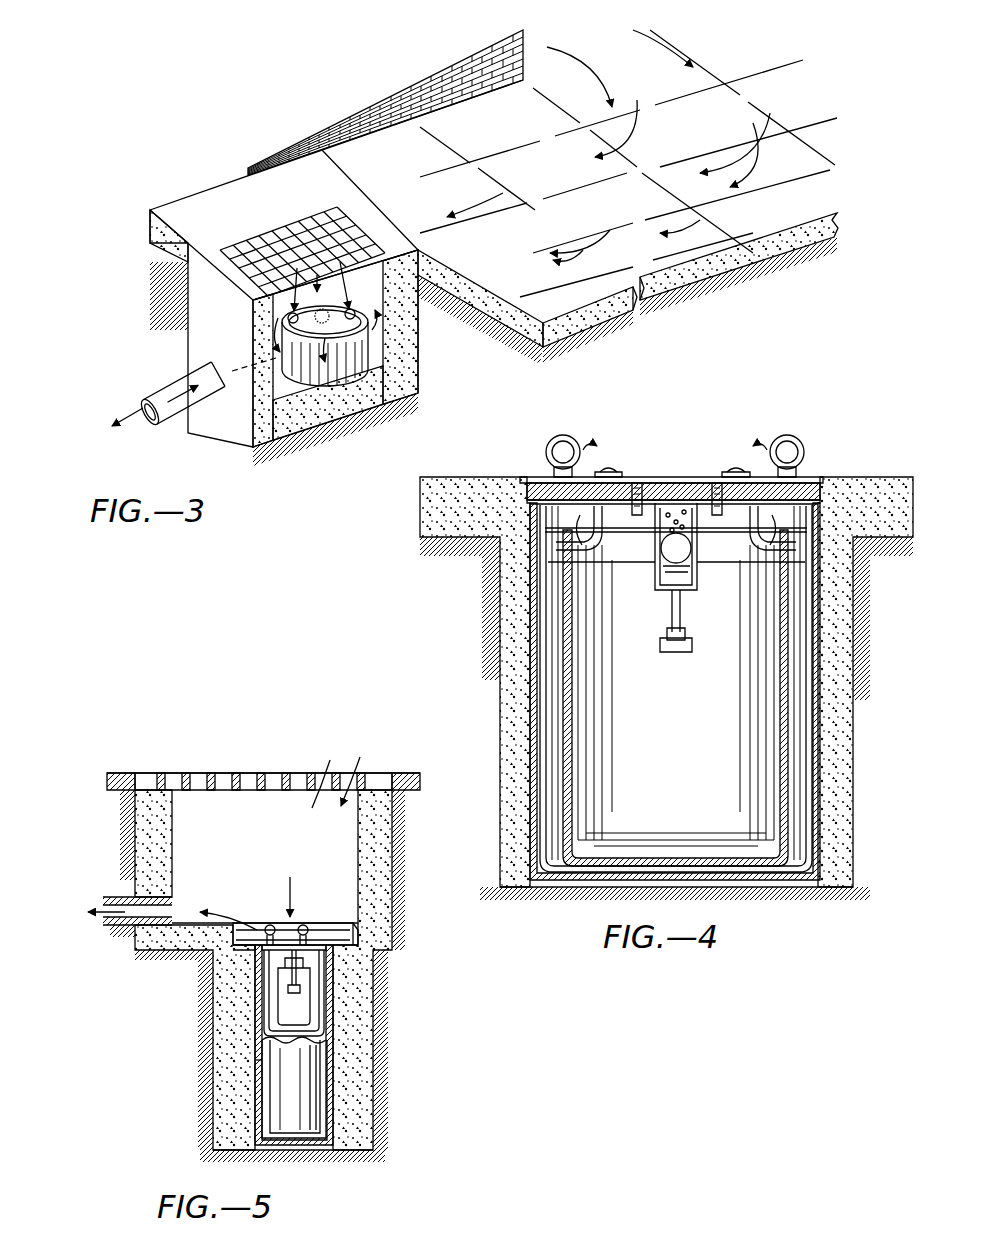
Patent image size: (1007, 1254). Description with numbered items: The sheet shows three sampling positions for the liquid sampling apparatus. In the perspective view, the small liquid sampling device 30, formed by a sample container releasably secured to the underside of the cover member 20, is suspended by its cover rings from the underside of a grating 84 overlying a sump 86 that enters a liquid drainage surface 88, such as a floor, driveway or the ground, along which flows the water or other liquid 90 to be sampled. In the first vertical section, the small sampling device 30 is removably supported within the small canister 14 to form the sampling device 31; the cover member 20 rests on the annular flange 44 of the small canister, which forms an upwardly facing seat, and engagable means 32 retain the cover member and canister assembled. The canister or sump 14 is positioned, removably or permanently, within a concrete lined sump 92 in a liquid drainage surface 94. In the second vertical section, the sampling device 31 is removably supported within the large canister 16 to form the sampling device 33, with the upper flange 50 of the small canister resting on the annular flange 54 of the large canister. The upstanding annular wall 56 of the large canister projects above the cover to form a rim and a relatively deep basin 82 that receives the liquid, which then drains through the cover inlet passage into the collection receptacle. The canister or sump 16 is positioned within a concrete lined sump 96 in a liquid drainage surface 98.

In FIG. 4, the small canister 14 is at (524, 768).
In FIG. 5, the small canister 14 is at (338, 985).
In FIG. 5, the large canister 16 is at (283, 1118).
In FIG. 4, the cover member 20 is at (537, 480).
In FIG. 4, the small liquid sampling device 30 is at (792, 690).
In FIG. 5, the small liquid sampling device 30 is at (252, 1010).
In FIG. 4, the sampling device 31 is at (530, 722).
In FIG. 5, the sampling device 31 is at (330, 1017).
In FIG. 4, the engagable means 32 is at (898, 512).
In FIG. 5, the sampling device 33 is at (250, 1098).
In FIG. 4, the annular flange 44 is at (812, 476).
In FIG. 4, the outwardly directed annular flange 50 is at (848, 476).
In FIG. 5, the outwardly directed annular flange 50 is at (345, 940).
In FIG. 5, the annular flange 54 is at (240, 957).
In FIG. 5, the upstanding annular wall 56 is at (357, 933).
In FIG. 3, the basin 82 is at (194, 392).
In FIG. 5, the basin 82 is at (270, 922).
In FIG. 3, the grating 84 is at (304, 226).
In FIG. 3, the sump 86 is at (290, 398).
In FIG. 3, the liquid drainage surface 88 is at (495, 288).
In FIG. 3, the liquid 90 is at (588, 208).
In FIG. 4, the concrete lined sump 92 is at (800, 730).
In FIG. 4, the liquid drainage surface 94 is at (428, 510).
In FIG. 5, the concrete lined sump 96 is at (322, 1068).
In FIG. 5, the liquid drainage surface 98 is at (128, 772).